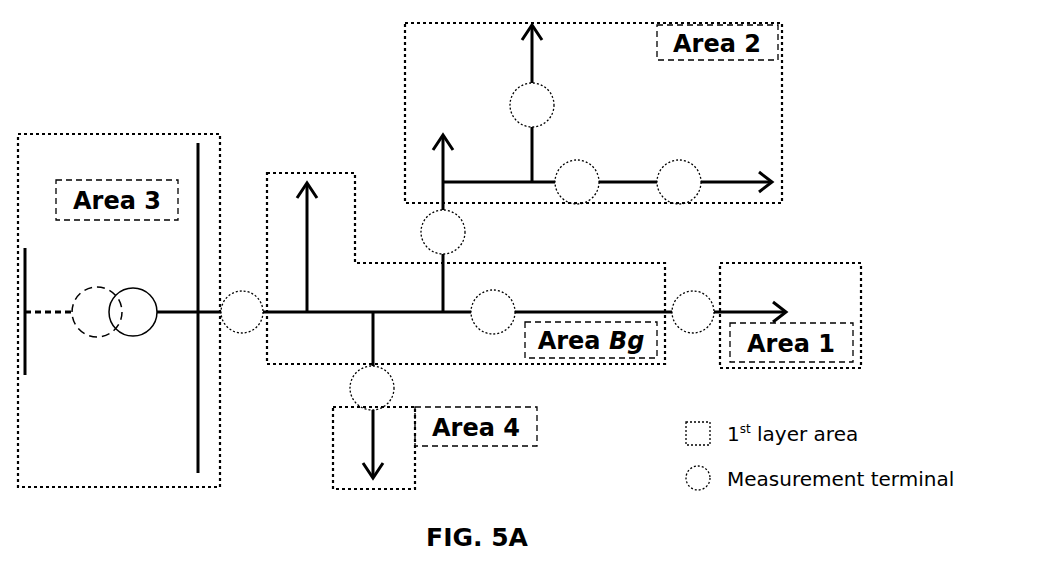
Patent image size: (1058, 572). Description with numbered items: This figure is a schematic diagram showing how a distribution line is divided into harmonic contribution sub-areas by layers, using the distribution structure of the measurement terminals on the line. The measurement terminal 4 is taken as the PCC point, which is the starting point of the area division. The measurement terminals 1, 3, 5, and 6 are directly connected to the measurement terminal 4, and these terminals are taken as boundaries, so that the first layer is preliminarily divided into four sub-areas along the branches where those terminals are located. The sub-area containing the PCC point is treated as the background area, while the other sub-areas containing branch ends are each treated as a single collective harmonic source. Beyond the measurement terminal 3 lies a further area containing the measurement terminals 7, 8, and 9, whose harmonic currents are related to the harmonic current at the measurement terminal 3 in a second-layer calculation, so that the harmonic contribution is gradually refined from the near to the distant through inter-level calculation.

The measurement terminal 1 is at (242, 312).
The measurement terminal 3 is at (443, 232).
The measurement terminal 4 is at (493, 312).
The measurement terminal 5 is at (693, 312).
The measurement terminal 6 is at (372, 388).
The measurement terminal 7 is at (532, 105).
The measurement terminal 8 is at (577, 182).
The measurement terminal 9 is at (679, 182).